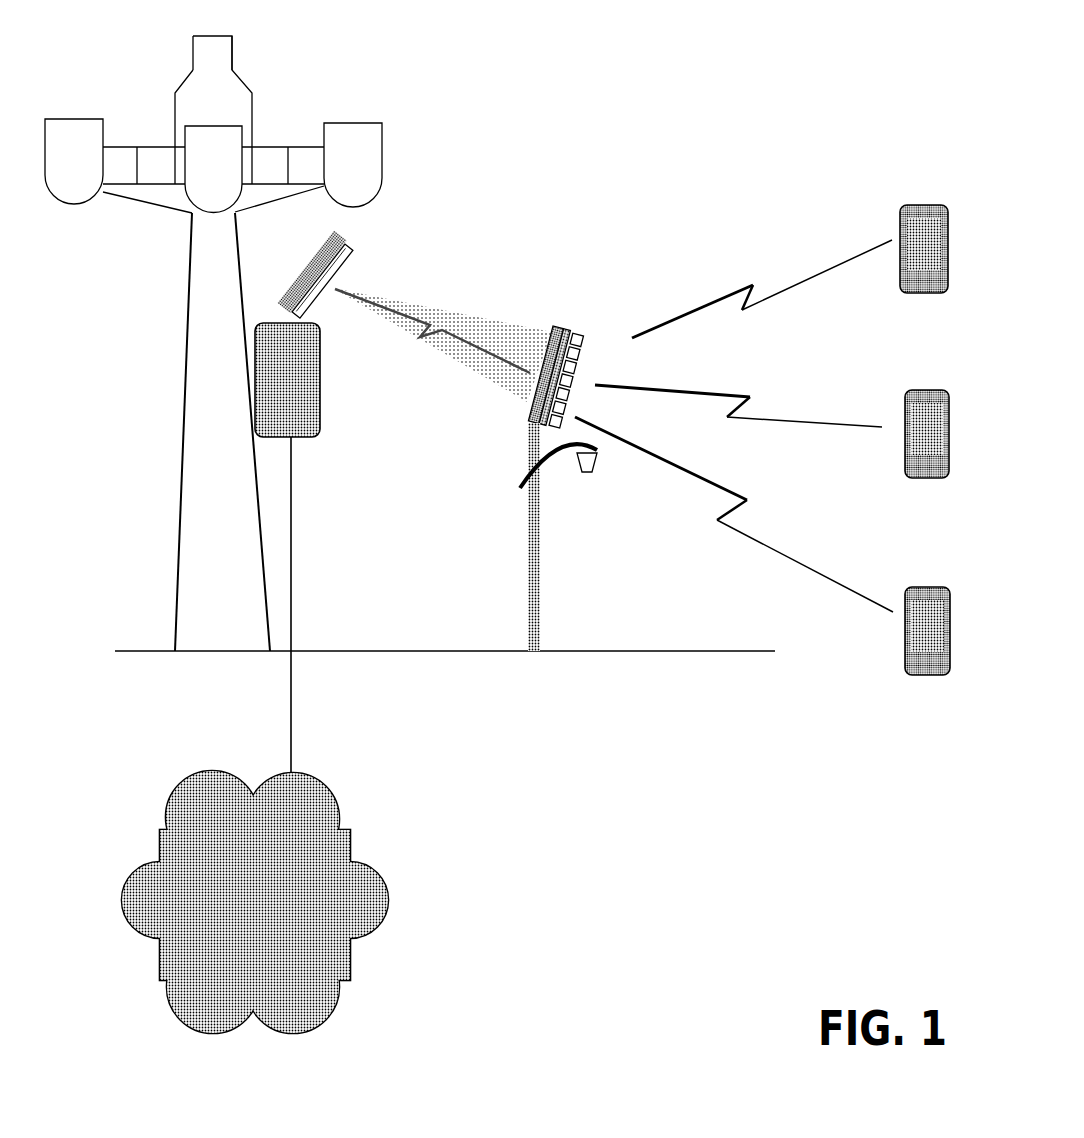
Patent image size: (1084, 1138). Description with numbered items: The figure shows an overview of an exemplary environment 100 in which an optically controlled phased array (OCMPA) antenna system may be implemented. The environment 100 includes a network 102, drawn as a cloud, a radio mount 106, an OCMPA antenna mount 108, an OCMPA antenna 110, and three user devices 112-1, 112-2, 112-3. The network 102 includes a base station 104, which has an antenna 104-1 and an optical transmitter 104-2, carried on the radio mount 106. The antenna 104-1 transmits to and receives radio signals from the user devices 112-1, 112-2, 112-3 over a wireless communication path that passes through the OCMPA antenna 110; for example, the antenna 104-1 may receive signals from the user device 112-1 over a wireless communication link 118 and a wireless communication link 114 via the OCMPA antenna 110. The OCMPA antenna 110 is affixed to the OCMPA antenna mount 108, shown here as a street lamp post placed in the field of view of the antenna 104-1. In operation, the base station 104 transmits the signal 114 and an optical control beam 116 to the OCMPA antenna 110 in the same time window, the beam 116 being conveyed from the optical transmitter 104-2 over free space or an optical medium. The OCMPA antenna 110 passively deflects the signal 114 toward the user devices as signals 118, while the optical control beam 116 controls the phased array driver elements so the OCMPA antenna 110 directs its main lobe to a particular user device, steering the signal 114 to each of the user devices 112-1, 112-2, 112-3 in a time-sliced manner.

The environment 100 is at (800, 77).
The network 102 is at (238, 925).
The base station 104 is at (320, 382).
The antenna 104-1 is at (353, 250).
The optical transmitter 104-2 is at (333, 229).
The radio mount 106 is at (217, 63).
The OCMPA antenna mount 108 is at (540, 538).
The OCMPA antenna 110 is at (573, 327).
The user device 112-1 is at (927, 261).
The user device 112-2 is at (928, 447).
The user device 112-3 is at (933, 646).
The signal 114 is at (430, 322).
The optical control beam 116 is at (512, 330).
The wireless communication link 118 is at (750, 287).